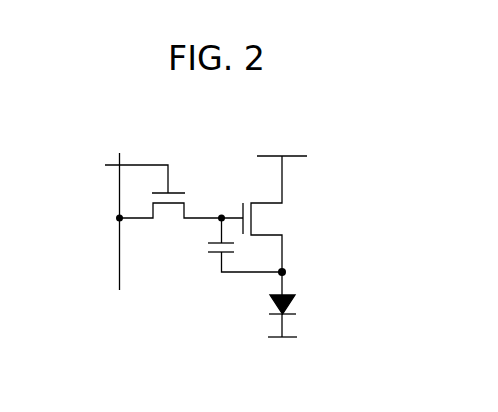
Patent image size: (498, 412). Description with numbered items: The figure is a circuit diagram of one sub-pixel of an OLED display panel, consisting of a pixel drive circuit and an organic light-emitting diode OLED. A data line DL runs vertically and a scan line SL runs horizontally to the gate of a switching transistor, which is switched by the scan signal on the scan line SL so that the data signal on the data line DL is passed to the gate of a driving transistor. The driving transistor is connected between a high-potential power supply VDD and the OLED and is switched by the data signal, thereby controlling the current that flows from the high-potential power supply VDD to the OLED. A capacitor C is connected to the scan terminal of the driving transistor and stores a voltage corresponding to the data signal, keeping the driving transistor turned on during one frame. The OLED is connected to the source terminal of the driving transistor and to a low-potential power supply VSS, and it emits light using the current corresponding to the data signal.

The data line DL is at (119, 209).
The scan line SL is at (125, 178).
The capacitor C is at (245, 245).
The organic light-emitting diode OLED is at (305, 301).
The high-potential power supply VDD is at (282, 144).
The low-potential power supply VSS is at (282, 350).